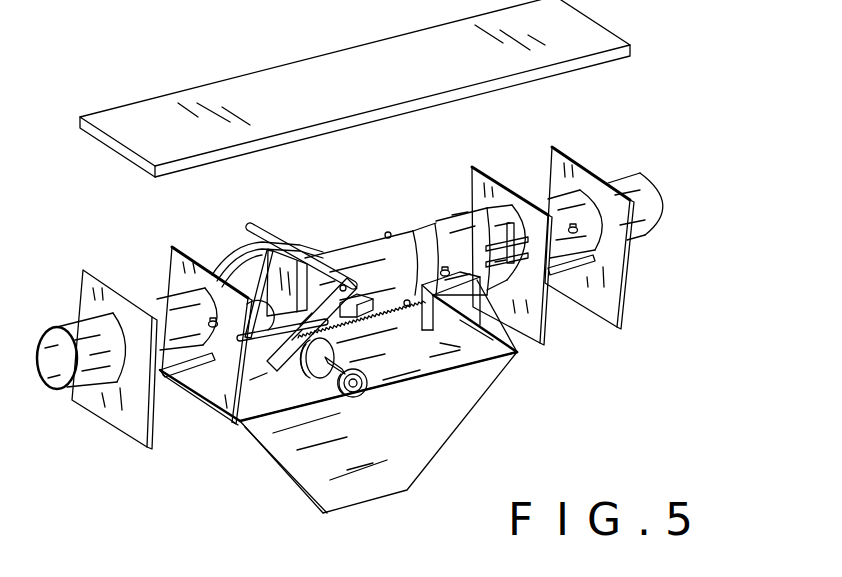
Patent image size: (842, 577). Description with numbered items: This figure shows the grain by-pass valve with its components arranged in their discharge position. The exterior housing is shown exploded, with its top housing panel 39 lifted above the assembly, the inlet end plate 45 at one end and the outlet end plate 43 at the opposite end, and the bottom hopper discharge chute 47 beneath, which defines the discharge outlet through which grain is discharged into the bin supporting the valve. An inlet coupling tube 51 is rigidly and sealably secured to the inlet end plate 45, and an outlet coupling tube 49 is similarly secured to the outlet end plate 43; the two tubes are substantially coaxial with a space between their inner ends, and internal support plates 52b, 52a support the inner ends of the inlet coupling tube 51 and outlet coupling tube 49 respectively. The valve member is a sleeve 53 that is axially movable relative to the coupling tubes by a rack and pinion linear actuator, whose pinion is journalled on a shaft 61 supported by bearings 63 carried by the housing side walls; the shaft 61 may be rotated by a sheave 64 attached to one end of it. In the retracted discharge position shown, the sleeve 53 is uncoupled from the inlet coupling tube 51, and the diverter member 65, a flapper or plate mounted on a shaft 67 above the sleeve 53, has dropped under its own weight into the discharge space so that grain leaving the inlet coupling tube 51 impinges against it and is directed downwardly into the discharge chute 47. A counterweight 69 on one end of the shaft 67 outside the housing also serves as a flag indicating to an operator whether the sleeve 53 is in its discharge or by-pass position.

The top housing panel 39 is at (590, 42).
The outlet end plate 43 is at (627, 275).
The inlet end plate 45 is at (125, 413).
The bottom hopper discharge chute 47 is at (468, 425).
The outlet coupling tube 49 is at (632, 187).
The inlet coupling tube 51 is at (78, 330).
The internal support plate 52a is at (547, 323).
The internal support plate 52b is at (192, 246).
The sleeve 53 is at (371, 250).
The shaft 61 is at (308, 376).
The bearings 63 is at (348, 392).
The sheave 64 is at (243, 242).
The diverter member 65 is at (284, 272).
The shaft 67 is at (292, 243).
The counterweight 69 is at (280, 350).